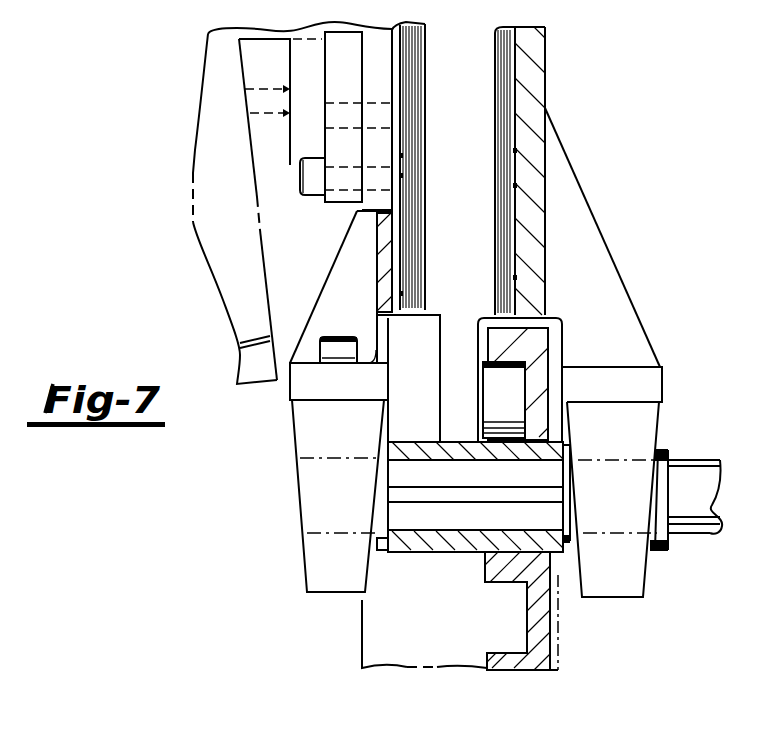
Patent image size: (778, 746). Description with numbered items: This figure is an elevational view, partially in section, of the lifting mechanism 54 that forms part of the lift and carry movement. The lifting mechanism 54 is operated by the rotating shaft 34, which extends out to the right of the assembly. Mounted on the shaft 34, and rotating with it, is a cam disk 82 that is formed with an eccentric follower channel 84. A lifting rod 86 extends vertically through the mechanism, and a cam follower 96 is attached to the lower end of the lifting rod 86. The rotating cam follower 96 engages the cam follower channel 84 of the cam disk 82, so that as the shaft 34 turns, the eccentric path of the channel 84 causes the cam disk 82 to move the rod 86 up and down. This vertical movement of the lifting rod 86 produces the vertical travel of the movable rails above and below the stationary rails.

The lifting mechanism 54 is at (602, 142).
The lifting rod 86 is at (488, 247).
The cam follower 96 is at (510, 398).
The shaft 34 is at (683, 462).
The cam follower channel 84 is at (502, 582).
The cam disk 82 is at (543, 642).